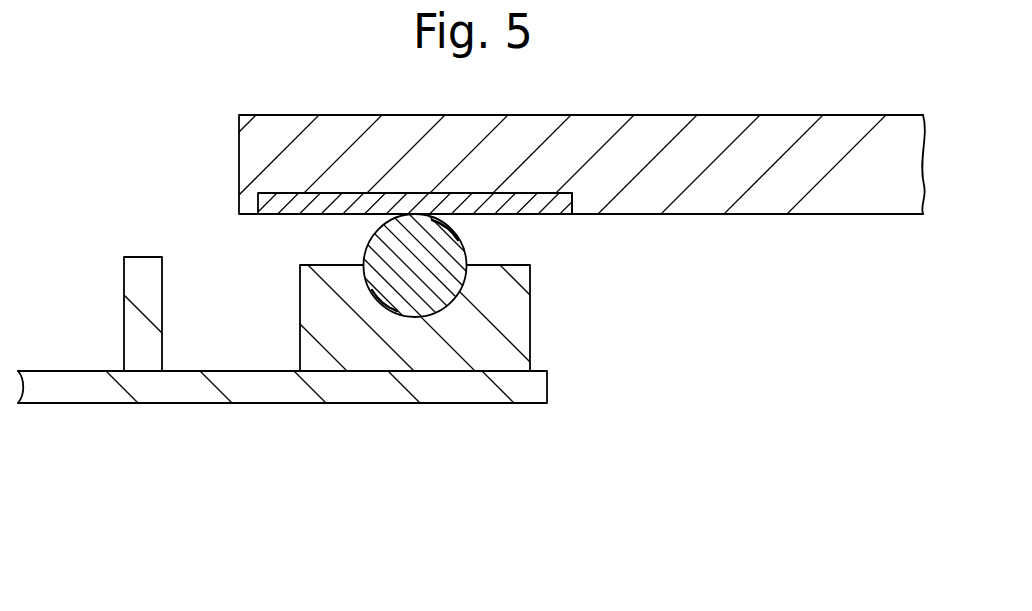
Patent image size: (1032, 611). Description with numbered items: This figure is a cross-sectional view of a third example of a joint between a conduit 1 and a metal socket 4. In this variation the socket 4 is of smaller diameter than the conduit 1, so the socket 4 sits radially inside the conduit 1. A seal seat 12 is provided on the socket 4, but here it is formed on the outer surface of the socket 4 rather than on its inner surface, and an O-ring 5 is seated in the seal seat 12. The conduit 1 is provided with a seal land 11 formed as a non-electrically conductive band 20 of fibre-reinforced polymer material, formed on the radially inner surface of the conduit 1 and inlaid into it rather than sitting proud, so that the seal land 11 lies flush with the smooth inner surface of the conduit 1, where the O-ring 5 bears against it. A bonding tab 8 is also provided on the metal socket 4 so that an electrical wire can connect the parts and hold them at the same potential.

The conduit 1 is at (825, 203).
The non-electrically conductive band 20 is at (263, 203).
The seal land 11 is at (562, 210).
The O-ring 5 is at (415, 307).
The seal seat 12 is at (323, 360).
The metal socket 4 is at (177, 393).
The bonding tab 8 is at (130, 313).